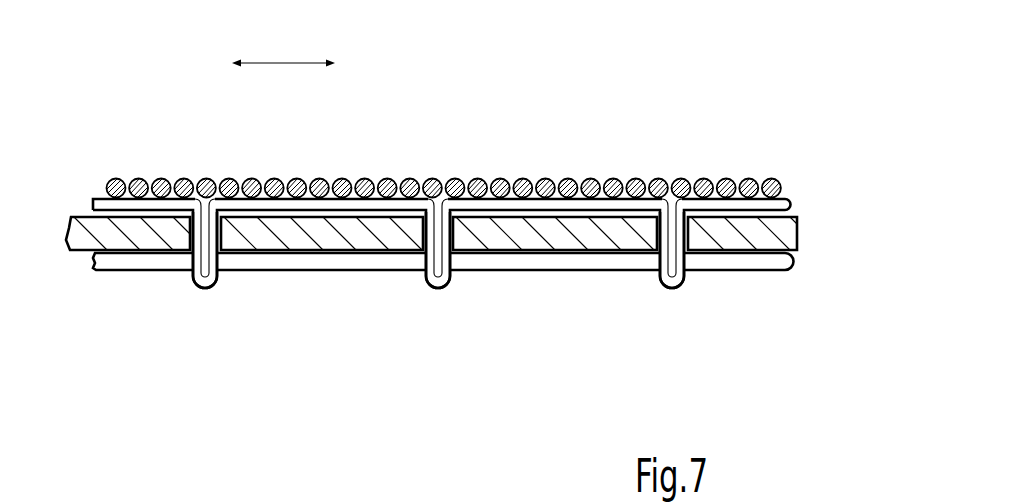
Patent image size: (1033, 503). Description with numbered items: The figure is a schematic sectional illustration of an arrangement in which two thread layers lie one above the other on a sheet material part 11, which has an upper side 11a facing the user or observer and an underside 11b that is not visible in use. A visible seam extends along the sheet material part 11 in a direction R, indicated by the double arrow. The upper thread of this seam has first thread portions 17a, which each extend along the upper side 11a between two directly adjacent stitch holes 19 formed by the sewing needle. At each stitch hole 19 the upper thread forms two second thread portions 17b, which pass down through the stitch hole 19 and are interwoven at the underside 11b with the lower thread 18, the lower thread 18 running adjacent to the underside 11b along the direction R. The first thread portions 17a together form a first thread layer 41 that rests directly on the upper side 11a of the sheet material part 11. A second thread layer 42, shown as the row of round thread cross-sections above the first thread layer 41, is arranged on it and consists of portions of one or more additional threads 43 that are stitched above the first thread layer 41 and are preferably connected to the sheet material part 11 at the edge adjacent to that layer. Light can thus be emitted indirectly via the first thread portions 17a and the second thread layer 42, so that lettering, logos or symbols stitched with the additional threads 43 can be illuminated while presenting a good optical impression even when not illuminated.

The sheet material part 11 is at (776, 232).
The upper side 11a is at (798, 206).
The underside 11b is at (795, 263).
The first thread portions 17a is at (148, 209).
The second thread portions 17b is at (219, 278).
The lower thread 18 is at (573, 260).
The stitch hole 19 is at (190, 232).
The first thread layer 41 is at (92, 205).
The second thread layer 42 is at (100, 185).
The additional thread 43 is at (297, 180).
The direction R is at (282, 62).